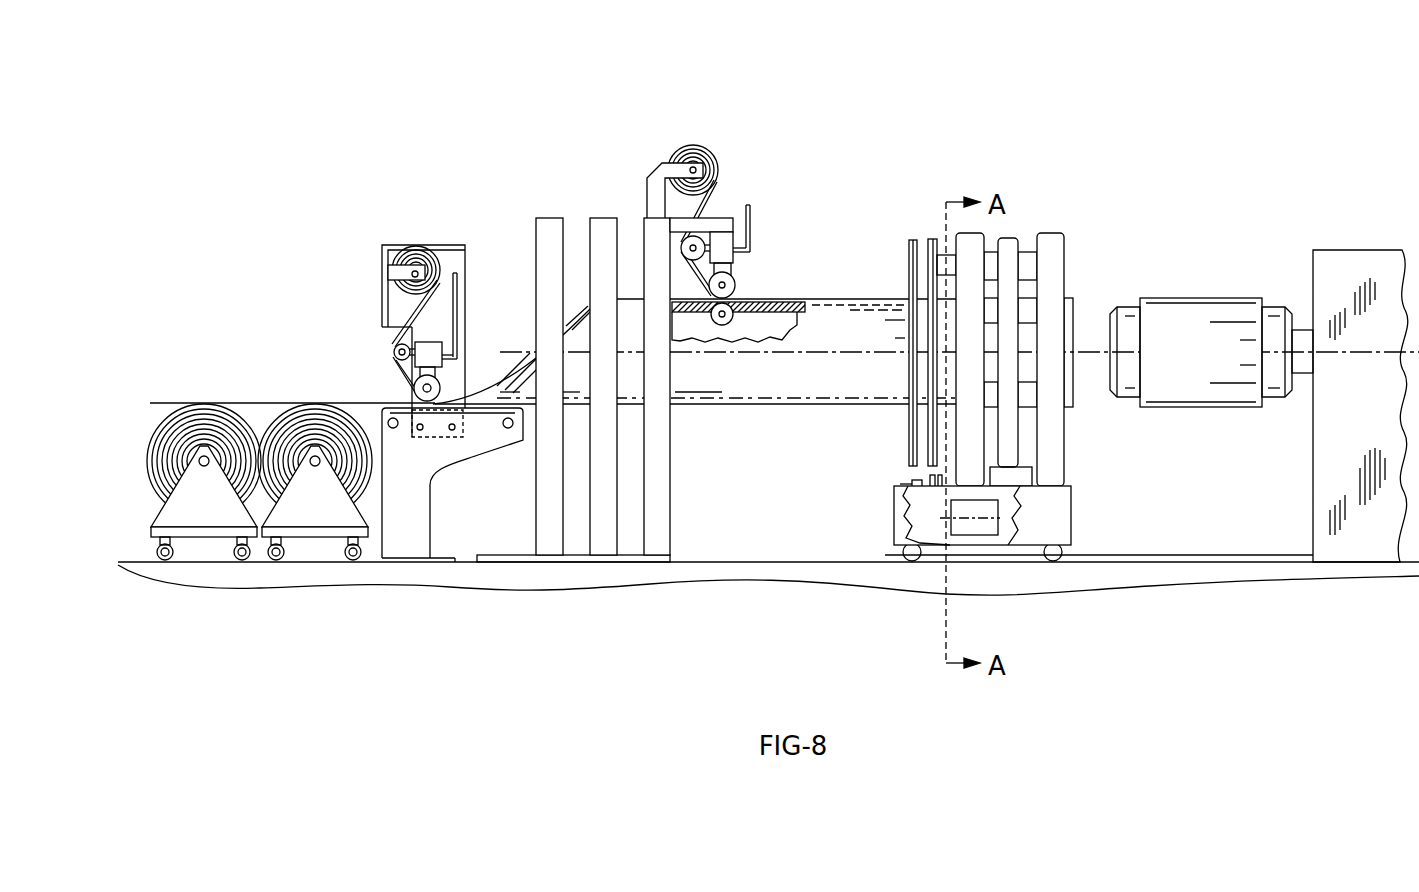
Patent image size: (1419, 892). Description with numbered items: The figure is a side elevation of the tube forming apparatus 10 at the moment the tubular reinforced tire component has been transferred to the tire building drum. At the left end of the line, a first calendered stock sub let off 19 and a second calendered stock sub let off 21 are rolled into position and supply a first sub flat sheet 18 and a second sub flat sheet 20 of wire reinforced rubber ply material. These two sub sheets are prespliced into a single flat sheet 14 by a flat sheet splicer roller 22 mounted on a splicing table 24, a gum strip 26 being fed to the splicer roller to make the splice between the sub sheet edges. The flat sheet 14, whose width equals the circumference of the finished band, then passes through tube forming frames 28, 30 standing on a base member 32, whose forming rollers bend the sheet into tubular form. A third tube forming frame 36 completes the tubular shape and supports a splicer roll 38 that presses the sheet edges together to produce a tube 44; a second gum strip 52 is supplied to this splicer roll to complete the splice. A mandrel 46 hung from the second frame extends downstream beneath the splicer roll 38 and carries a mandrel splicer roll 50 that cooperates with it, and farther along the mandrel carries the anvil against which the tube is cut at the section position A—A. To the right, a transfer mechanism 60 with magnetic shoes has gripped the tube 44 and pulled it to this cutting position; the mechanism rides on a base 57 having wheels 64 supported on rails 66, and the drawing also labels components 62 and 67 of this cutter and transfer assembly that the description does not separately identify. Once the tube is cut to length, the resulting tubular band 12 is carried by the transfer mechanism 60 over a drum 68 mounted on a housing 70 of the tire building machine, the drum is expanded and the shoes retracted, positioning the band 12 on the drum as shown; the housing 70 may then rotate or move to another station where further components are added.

The tube forming apparatus 10 is at (1028, 158).
The tubular band 12 is at (1200, 318).
The flat sheet 14 is at (503, 380).
The first sub flat sheet 18 is at (210, 420).
The first calendered stock sub let off 19 is at (208, 505).
The second sub flat sheet 20 is at (320, 420).
The second calendered stock sub let off 21 is at (318, 505).
The flat sheet splicer roller 22 is at (418, 390).
The splicing table 24 is at (418, 512).
The gum strip 26 is at (418, 253).
The tube forming frame 28 is at (553, 238).
The tube forming frame 30 is at (605, 238).
The base member 32 is at (492, 560).
The third tube forming frame 36 is at (658, 507).
The splicer roll 38 is at (735, 285).
The tube 44 is at (702, 377).
The mandrel 46 is at (768, 313).
The mandrel splicer roll 50 is at (733, 313).
The gum strip 52 is at (710, 160).
The base 57 is at (1073, 492).
The transfer mechanism 60 is at (1022, 532).
The carriage housing 62 is at (1062, 516).
The wheels 64 is at (908, 556).
The rails 66 is at (1205, 558).
The cutting assembly 67 is at (1012, 242).
The drum 68 is at (1277, 310).
The housing 70 is at (1350, 265).